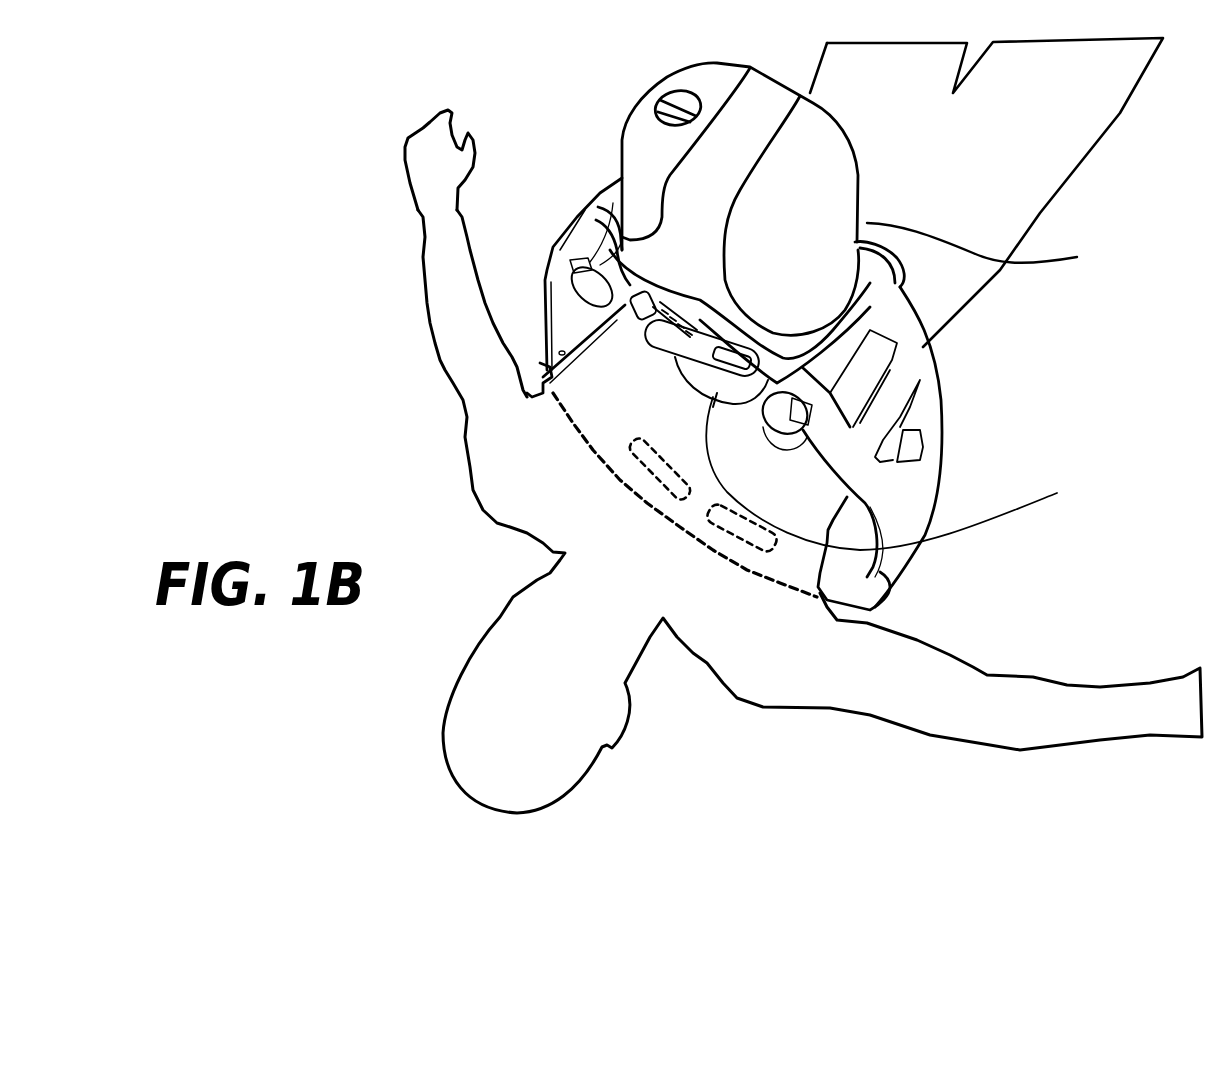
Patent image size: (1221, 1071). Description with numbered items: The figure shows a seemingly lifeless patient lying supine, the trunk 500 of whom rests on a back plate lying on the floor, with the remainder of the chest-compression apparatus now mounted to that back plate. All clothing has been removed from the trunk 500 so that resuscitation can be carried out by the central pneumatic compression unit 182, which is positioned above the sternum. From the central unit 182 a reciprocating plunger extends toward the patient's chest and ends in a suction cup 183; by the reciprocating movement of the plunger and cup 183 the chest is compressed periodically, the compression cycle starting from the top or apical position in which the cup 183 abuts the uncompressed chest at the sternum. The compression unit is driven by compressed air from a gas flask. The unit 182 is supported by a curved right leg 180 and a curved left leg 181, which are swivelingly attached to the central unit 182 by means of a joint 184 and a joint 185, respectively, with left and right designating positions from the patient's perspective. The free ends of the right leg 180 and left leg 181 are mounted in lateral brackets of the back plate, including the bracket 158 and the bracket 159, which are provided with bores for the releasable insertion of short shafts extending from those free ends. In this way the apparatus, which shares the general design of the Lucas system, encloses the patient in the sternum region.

The lateral bracket 158 is at (877, 612).
The lateral bracket 159 is at (541, 383).
The right leg 180 is at (903, 483).
The left leg 181 is at (562, 270).
The central pneumatic compression unit 182 is at (817, 213).
The suction cup 183 is at (899, 473).
The joint 184 is at (850, 432).
The joint 185 is at (590, 293).
The trunk 500 is at (995, 248).